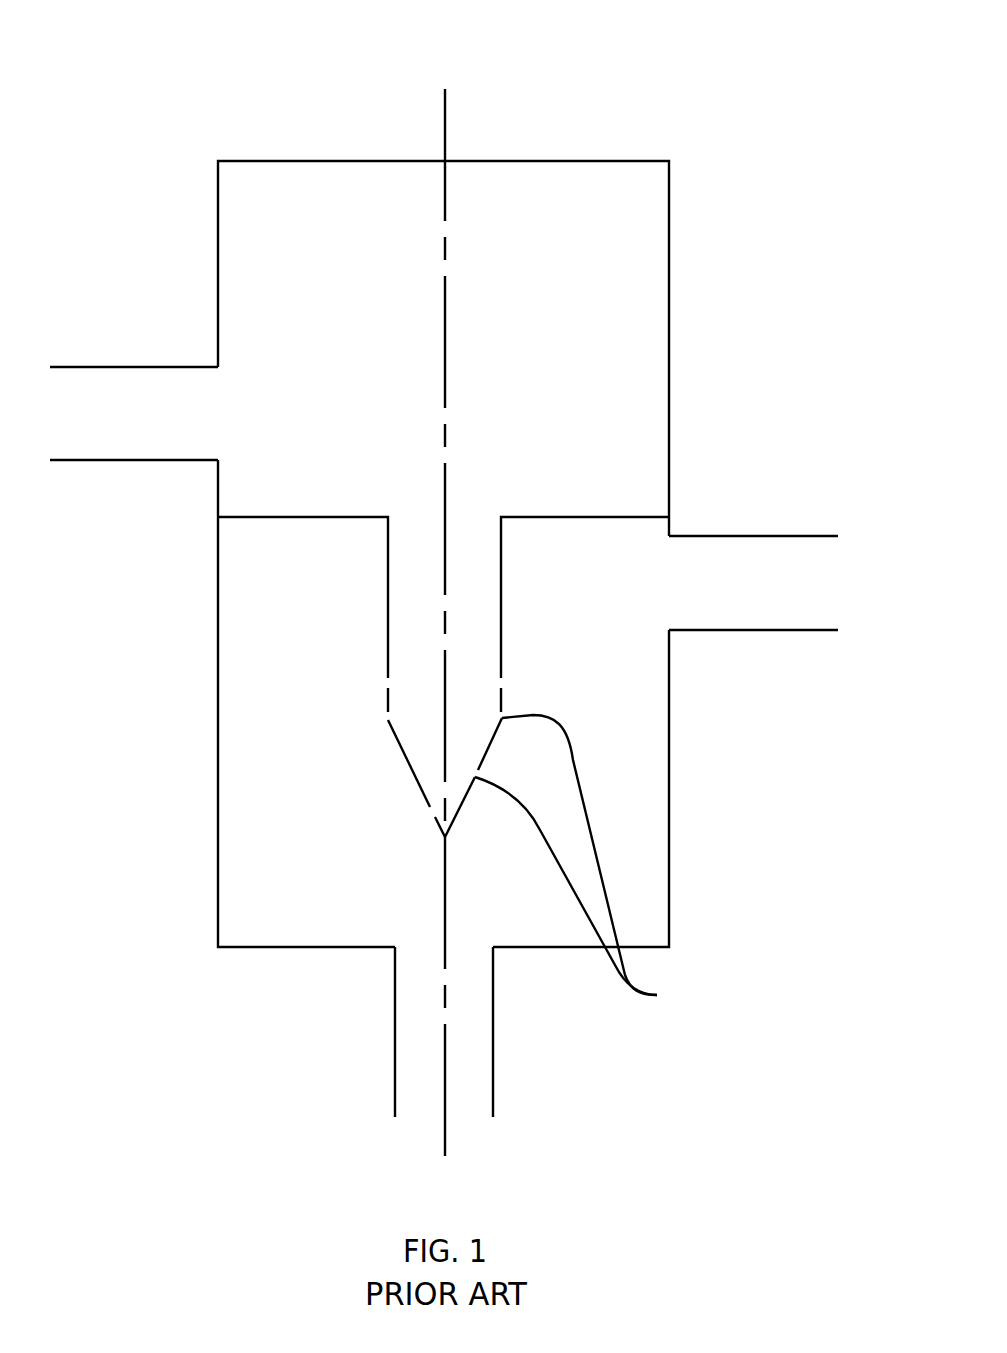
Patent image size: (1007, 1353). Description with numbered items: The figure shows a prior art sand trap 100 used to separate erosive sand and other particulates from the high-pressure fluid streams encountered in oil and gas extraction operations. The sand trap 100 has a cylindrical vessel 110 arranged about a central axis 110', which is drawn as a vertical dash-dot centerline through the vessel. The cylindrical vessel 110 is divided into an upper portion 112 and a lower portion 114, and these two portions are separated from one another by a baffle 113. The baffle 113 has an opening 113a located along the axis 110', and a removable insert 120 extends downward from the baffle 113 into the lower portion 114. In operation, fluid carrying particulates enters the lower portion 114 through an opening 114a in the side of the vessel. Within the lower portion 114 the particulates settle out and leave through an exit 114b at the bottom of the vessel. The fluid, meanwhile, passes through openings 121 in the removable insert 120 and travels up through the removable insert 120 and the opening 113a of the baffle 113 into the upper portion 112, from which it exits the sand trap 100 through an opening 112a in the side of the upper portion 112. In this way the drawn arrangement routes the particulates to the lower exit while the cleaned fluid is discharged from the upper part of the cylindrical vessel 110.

The sand trap 100 is at (152, 37).
The cylindrical vessel 110 is at (447, 627).
The axis 110' is at (545, 598).
The upper portion 112 is at (644, 324).
The opening 112a is at (218, 417).
The baffle 113 is at (290, 517).
The opening 113a is at (415, 520).
The lower portion 114 is at (654, 796).
The opening 114a is at (668, 577).
The exit 114b is at (462, 950).
The removable insert 120 is at (348, 732).
The openings 121 is at (587, 865).